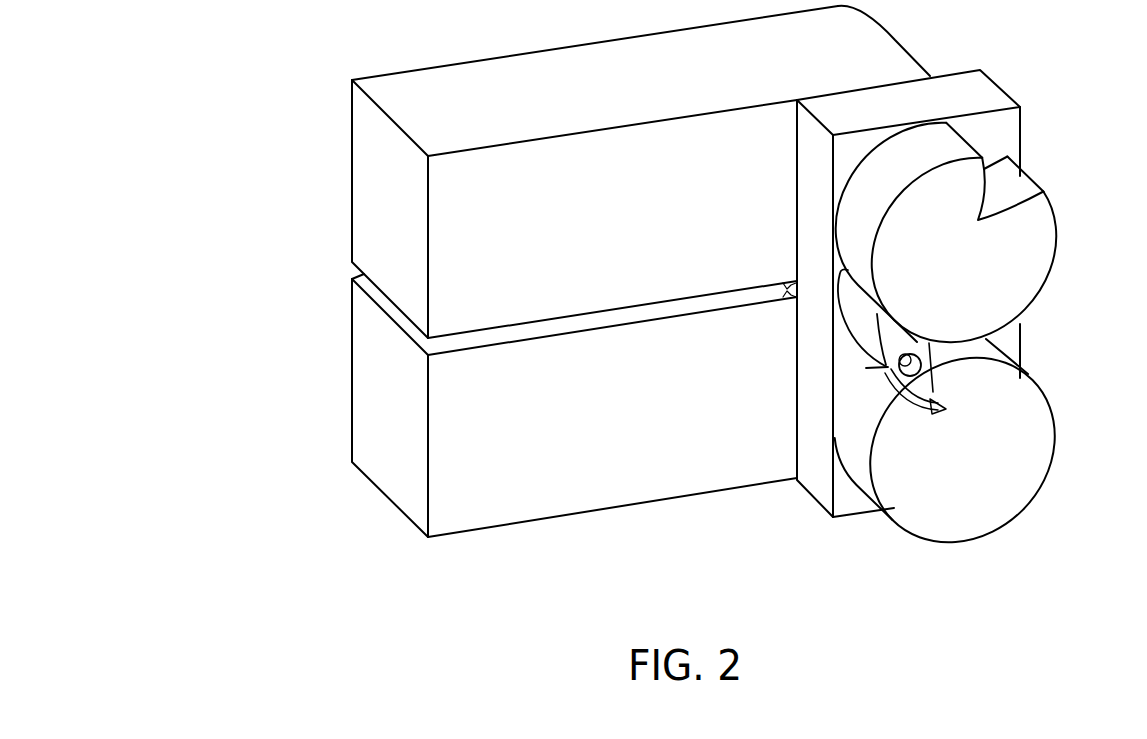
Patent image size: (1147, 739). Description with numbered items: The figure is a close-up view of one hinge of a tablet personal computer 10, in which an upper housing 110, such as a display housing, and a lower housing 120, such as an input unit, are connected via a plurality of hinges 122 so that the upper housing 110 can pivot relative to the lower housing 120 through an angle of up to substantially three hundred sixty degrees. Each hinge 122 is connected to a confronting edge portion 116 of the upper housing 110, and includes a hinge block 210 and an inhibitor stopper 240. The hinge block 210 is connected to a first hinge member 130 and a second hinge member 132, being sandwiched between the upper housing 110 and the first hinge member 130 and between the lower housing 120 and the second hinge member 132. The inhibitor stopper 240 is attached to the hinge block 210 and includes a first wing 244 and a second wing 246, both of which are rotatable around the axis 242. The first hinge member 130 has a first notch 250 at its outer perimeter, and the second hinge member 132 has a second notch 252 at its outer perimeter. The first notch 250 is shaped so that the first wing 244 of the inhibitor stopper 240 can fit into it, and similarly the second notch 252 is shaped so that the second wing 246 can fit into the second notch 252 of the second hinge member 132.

The tablet personal computer 10 is at (668, 293).
The upper housing 110 is at (536, 60).
The confronting edge portion 116 is at (900, 52).
The lower housing 120 is at (510, 514).
The hinge 122 is at (937, 351).
The first hinge member 130 is at (1048, 226).
The second hinge member 132 is at (1048, 437).
The hinge block 210 is at (988, 90).
The inhibitor stopper 240 is at (857, 324).
The axis 242 is at (897, 369).
The first wing 244 is at (888, 312).
The second wing 246 is at (928, 395).
The first notch 250 is at (1022, 184).
The second notch 252 is at (938, 412).